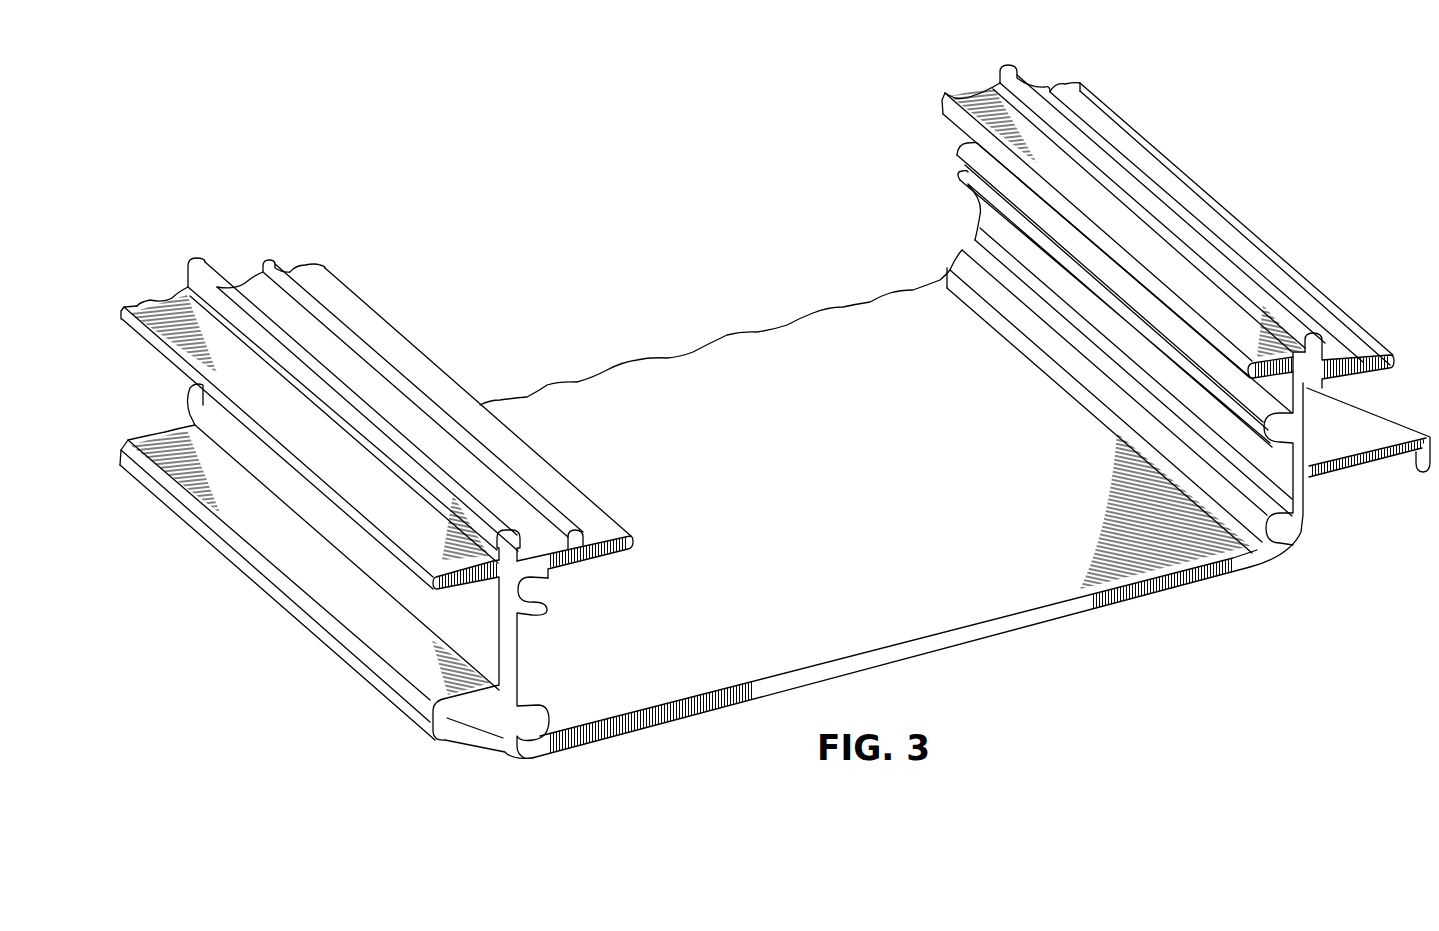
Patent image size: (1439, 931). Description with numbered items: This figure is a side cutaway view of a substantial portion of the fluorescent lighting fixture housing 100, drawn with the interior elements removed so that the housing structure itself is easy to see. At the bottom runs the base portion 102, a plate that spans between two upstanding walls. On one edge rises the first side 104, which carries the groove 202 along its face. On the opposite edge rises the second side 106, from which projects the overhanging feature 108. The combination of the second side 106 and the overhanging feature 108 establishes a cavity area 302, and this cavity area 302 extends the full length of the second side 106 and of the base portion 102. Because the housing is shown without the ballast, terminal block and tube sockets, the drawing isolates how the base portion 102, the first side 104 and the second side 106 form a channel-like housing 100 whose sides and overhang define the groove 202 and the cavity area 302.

The fluorescent lighting fixture housing 100 is at (775, 439).
The base portion 102 is at (900, 623).
The first side 104 is at (1297, 428).
The second side 106 is at (507, 650).
The overhanging feature 108 is at (613, 545).
The groove 202 is at (1293, 533).
The cavity area 302 is at (557, 681).